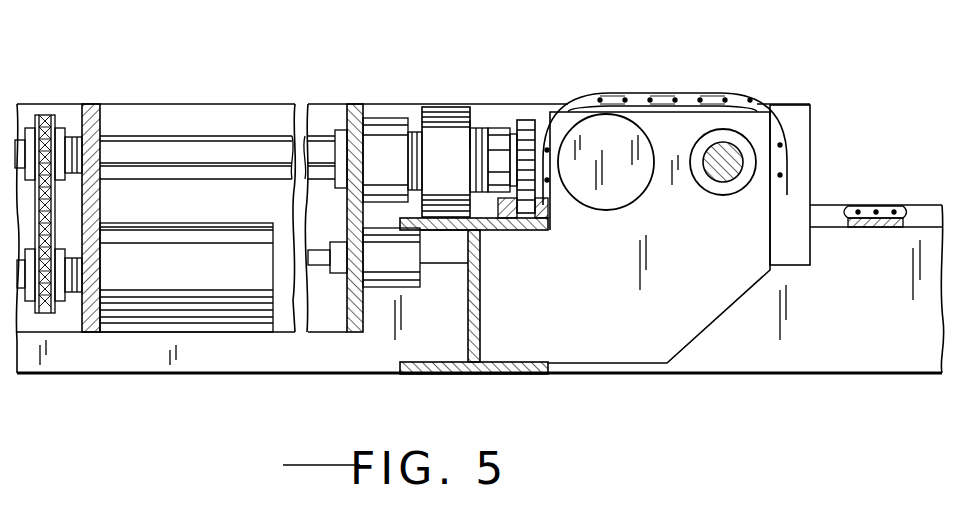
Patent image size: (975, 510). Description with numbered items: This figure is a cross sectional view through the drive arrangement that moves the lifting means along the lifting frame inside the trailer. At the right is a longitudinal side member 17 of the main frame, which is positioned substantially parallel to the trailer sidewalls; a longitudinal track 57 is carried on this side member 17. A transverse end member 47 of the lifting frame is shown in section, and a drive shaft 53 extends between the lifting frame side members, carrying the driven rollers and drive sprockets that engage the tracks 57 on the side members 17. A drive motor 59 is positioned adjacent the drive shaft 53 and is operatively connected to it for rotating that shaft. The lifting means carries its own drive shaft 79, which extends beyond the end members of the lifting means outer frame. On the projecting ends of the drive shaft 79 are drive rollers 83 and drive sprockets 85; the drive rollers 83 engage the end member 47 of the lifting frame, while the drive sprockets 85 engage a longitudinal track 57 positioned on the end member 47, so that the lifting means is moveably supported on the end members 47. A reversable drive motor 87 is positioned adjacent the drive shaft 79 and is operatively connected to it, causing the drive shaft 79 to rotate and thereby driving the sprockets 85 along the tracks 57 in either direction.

The longitudinal side member 17 is at (872, 328).
The transverse end member 47 is at (482, 328).
The drive shaft 53 is at (717, 187).
The longitudinal track 57 is at (552, 212).
The drive motor 59 is at (607, 127).
The drive shaft 79 is at (200, 134).
The drive roller 83 is at (438, 104).
The drive sprocket 85 is at (525, 119).
The reversable drive motor 87 is at (192, 291).